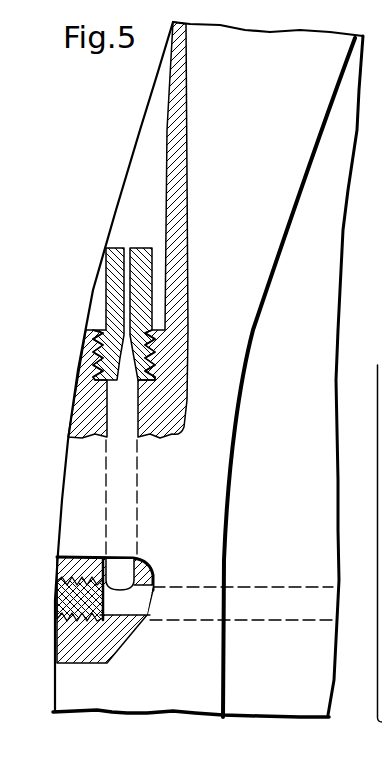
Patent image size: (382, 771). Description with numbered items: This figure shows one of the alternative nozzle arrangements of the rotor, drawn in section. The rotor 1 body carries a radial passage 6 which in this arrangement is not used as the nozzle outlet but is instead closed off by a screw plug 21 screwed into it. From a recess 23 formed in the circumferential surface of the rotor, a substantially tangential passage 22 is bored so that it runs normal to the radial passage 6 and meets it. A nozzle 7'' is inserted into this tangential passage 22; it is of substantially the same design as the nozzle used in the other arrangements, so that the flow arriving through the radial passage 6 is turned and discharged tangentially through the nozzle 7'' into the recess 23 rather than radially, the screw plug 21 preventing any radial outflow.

The base body 1 is at (127, 685).
The radial passage 6 is at (128, 608).
The nozzle 7'' is at (106, 314).
The screw plug 21 is at (72, 601).
The tangential passage 22 is at (116, 576).
The recess 23 is at (145, 189).